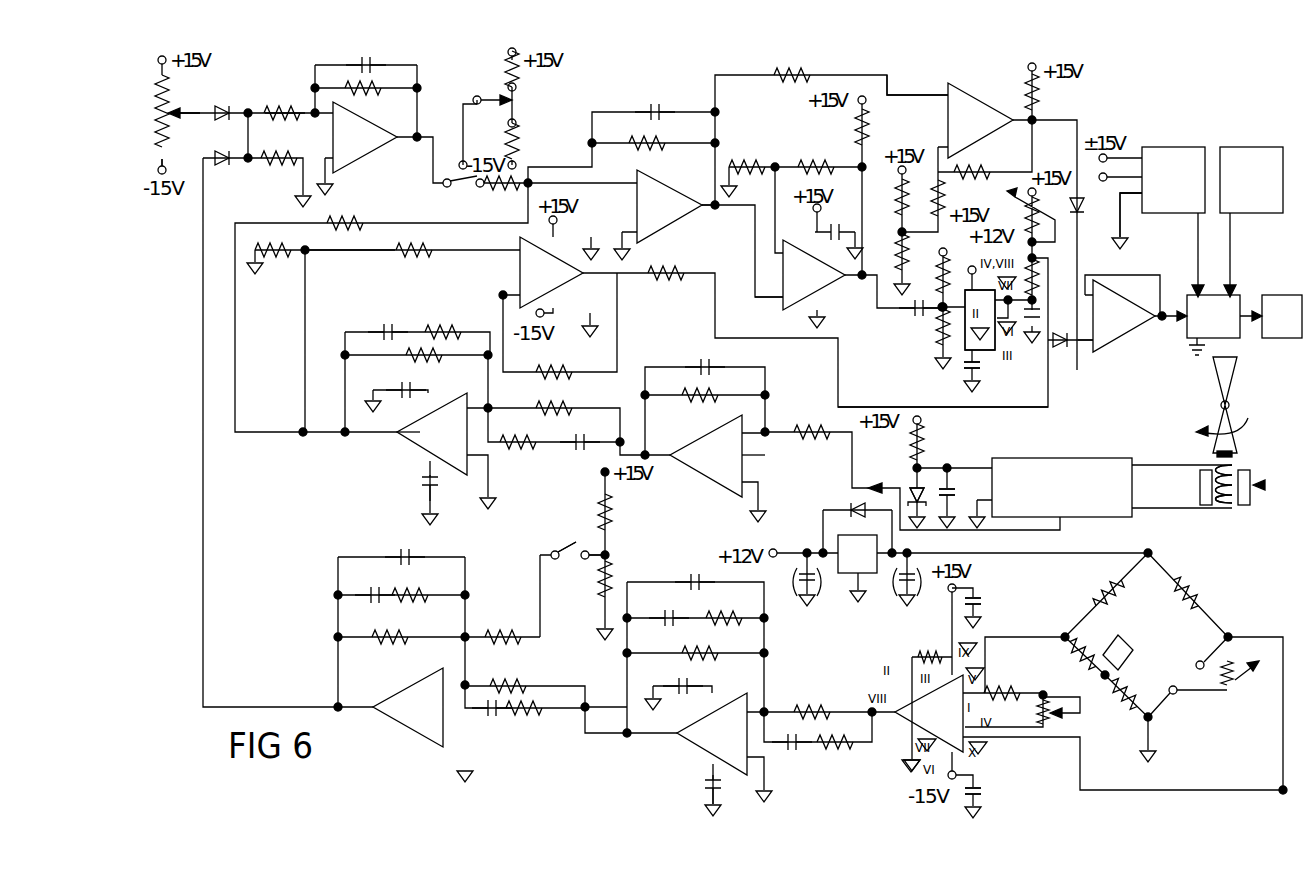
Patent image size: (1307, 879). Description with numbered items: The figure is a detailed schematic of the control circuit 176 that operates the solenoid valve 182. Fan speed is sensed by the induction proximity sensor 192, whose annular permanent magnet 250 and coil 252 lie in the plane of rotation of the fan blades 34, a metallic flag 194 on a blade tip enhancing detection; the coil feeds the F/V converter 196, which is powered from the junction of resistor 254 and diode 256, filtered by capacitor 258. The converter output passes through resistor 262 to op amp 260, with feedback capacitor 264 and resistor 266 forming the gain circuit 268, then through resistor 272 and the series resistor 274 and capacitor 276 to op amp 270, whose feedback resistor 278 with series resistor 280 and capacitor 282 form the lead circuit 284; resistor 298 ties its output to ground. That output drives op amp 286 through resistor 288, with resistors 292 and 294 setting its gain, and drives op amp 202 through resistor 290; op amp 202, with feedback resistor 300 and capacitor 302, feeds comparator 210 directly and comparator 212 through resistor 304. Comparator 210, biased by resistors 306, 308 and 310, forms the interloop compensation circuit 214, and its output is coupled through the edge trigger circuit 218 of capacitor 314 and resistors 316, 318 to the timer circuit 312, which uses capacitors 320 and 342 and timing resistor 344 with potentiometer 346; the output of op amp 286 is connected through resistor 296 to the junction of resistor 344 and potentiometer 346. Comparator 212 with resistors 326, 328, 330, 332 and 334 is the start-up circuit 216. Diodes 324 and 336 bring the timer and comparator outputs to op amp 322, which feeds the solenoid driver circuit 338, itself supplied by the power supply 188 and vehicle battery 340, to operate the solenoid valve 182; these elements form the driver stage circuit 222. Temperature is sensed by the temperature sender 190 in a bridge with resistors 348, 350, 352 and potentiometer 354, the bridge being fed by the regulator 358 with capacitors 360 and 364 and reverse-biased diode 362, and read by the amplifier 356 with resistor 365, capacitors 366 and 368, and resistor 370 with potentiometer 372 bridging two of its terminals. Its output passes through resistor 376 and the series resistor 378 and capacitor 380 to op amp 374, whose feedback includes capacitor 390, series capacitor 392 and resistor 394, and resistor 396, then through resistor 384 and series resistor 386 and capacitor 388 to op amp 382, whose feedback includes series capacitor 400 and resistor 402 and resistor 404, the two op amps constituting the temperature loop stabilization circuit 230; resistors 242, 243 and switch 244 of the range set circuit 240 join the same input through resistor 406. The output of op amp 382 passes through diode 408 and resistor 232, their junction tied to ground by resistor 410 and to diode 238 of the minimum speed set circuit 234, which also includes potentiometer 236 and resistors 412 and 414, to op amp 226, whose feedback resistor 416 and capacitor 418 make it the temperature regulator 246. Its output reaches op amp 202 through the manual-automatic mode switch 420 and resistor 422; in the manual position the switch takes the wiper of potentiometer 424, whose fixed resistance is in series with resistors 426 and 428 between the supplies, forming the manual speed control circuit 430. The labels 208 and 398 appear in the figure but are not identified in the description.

The capacitance transducer 34 is at (1232, 366).
The display circuit 176 is at (1120, 113).
The display 182 is at (1282, 316).
The power supply 188 is at (1173, 180).
The potentiometer 190 is at (1237, 692).
The electrode 192 is at (1275, 487).
The float arm 194 is at (1217, 455).
The oscillator 196 is at (1062, 487).
The operational amplifier 202 is at (669, 206).
The integrator circuit 208 is at (700, 224).
The operational amplifier 210 is at (819, 267).
The operational amplifier 212 is at (980, 120).
The comparator circuit 214 is at (767, 302).
The comparator circuit 216 is at (937, 83).
The switch circuit 218 is at (932, 357).
The output circuit 222 is at (1103, 385).
The operational amplifier 226 is at (360, 147).
The amplifier circuit 230 is at (583, 745).
The resistor 232 is at (272, 116).
The input potentiometer 234 is at (210, 92).
The wiper 236 is at (170, 118).
The diode 238 is at (233, 120).
The switch 240 is at (623, 552).
The potentiometer 242 is at (608, 502).
The potentiometer section 243 is at (595, 592).
The switch contact 244 is at (592, 552).
The input circuit 246 is at (301, 100).
The plate 250 is at (1245, 513).
The coil 252 is at (1225, 511).
The resistor 254 is at (920, 440).
The zener diode 256 is at (910, 490).
The capacitor 258 is at (955, 487).
The operational amplifier 260 is at (706, 456).
The resistor 262 is at (810, 432).
The capacitor 264 is at (726, 352).
The resistor 266 is at (690, 400).
The amplifier circuit 268 is at (760, 448).
The operational amplifier 270 is at (426, 441).
The resistor 272 is at (575, 375).
The resistor 274 is at (520, 457).
The capacitor 276 is at (578, 450).
The resistor 278 is at (435, 358).
The resistor 280 is at (447, 306).
The capacitor 282 is at (386, 326).
The amplifier circuit 284 is at (412, 448).
The operational amplifier 286 is at (551, 272).
The resistor 288 is at (420, 255).
The resistor 290 is at (343, 223).
The input line 292 is at (408, 256).
The resistor 294 is at (533, 395).
The resistor 296 is at (669, 278).
The resistor 298 is at (280, 255).
The resistor 300 is at (662, 148).
The capacitor 302 is at (660, 85).
The resistor 304 is at (793, 82).
The resistor 306 is at (745, 163).
The resistor 308 is at (820, 165).
The resistor 310 is at (857, 126).
The relay 312 is at (995, 345).
The capacitor 314 is at (900, 312).
The resistor 316 is at (930, 328).
The potentiometer 318 is at (935, 352).
The capacitor 320 is at (983, 370).
The operational amplifier 322 is at (1124, 316).
The diode 324 is at (1058, 348).
The resistor 326 is at (890, 187).
The resistor 328 is at (897, 262).
The resistor 330 is at (952, 188).
The resistor 332 is at (975, 170).
The resistor 334 is at (1038, 97).
The diode 336 is at (1078, 205).
The display driver 338 is at (1213, 316).
The clock 340 is at (1251, 180).
The capacitor 342 is at (1040, 315).
The potentiometer 344 is at (1038, 272).
The ground connection 346 is at (1120, 242).
The bridge resistor 348 is at (1203, 582).
The bridge resistor 350 is at (1097, 594).
The bridge resistor 352 is at (1123, 680).
The thermistor 354 is at (1093, 652).
The operational amplifier 356 is at (929, 713).
The relay coil 358 is at (850, 574).
The capacitor 360 is at (917, 603).
The relay 362 is at (852, 502).
The capacitor 364 is at (794, 604).
The resistor 365 is at (918, 645).
The capacitor 366 is at (983, 792).
The capacitor 368 is at (984, 602).
The resistor 370 is at (1013, 692).
The potentiometer 372 is at (1055, 717).
The operational amplifier 374 is at (705, 741).
The resistor 376 is at (815, 705).
The resistor 378 is at (840, 748).
The capacitor 380 is at (792, 748).
The operational amplifier 382 is at (408, 707).
The resistor 384 is at (528, 675).
The resistor 386 is at (545, 715).
The capacitor 388 is at (492, 716).
The capacitor 390 is at (698, 578).
The capacitor 392 is at (668, 612).
The resistor 394 is at (727, 616).
The resistor 396 is at (688, 653).
The capacitor 398 is at (400, 552).
The capacitor 400 is at (373, 592).
The resistor 402 is at (420, 592).
The resistor 404 is at (398, 640).
The resistor 406 is at (505, 633).
The diode 408 is at (228, 167).
The resistor 410 is at (283, 164).
The potentiometer 412 is at (162, 85).
The potentiometer terminal 414 is at (160, 153).
The resistor 416 is at (376, 96).
The capacitor 418 is at (380, 55).
The switch 420 is at (470, 185).
The resistor 422 is at (505, 186).
The wiper 424 is at (514, 100).
The resistor 426 is at (510, 75).
The resistor 428 is at (514, 140).
The potentiometer 430 is at (572, 100).